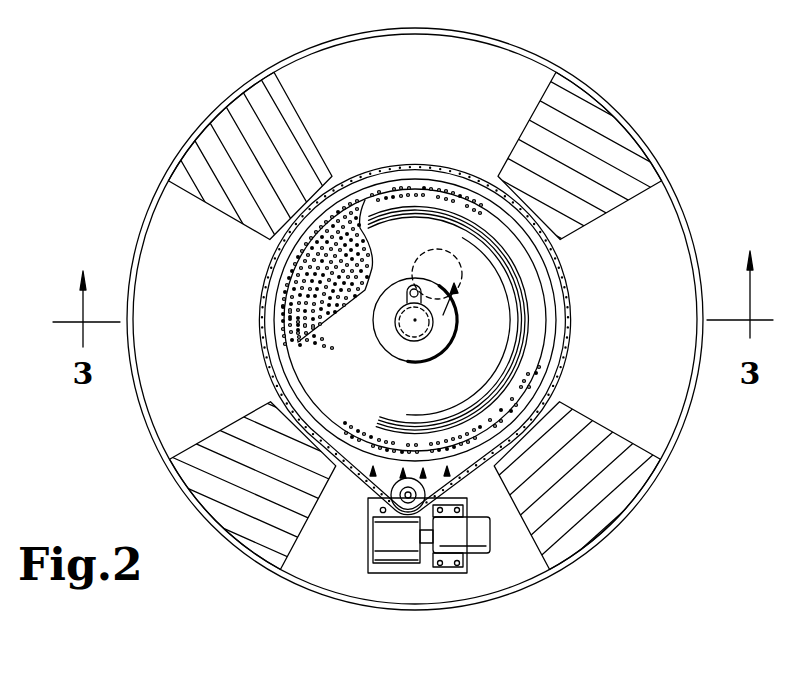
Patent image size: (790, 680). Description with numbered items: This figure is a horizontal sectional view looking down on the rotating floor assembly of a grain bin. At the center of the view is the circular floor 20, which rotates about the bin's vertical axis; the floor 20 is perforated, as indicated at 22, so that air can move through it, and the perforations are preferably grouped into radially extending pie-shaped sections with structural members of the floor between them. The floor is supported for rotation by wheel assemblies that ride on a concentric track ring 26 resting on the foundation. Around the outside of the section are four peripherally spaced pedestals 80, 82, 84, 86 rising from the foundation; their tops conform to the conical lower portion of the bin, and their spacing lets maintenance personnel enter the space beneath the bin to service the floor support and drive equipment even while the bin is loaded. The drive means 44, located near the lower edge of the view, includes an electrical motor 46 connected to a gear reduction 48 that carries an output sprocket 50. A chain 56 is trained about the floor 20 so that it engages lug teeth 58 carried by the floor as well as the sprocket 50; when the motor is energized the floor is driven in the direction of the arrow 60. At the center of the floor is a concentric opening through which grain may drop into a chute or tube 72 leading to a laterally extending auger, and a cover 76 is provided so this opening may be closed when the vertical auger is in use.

The floor 20 is at (355, 193).
The perforated portions of the floor 22 is at (278, 263).
The track ring 26 is at (522, 322).
The drive means 44 is at (455, 593).
The electrical motor 46 is at (475, 538).
The gear reduction 48 is at (377, 535).
The output sprocket 50 is at (407, 503).
The chain 56 is at (567, 356).
The lug teeth 58 is at (370, 476).
The arrow 60 is at (425, 190).
The chute or tube 72 is at (407, 328).
The cover 76 is at (458, 264).
The pedestal 80 is at (615, 137).
The pedestal 82 is at (225, 123).
The pedestal 84 is at (238, 522).
The pedestal 86 is at (627, 485).